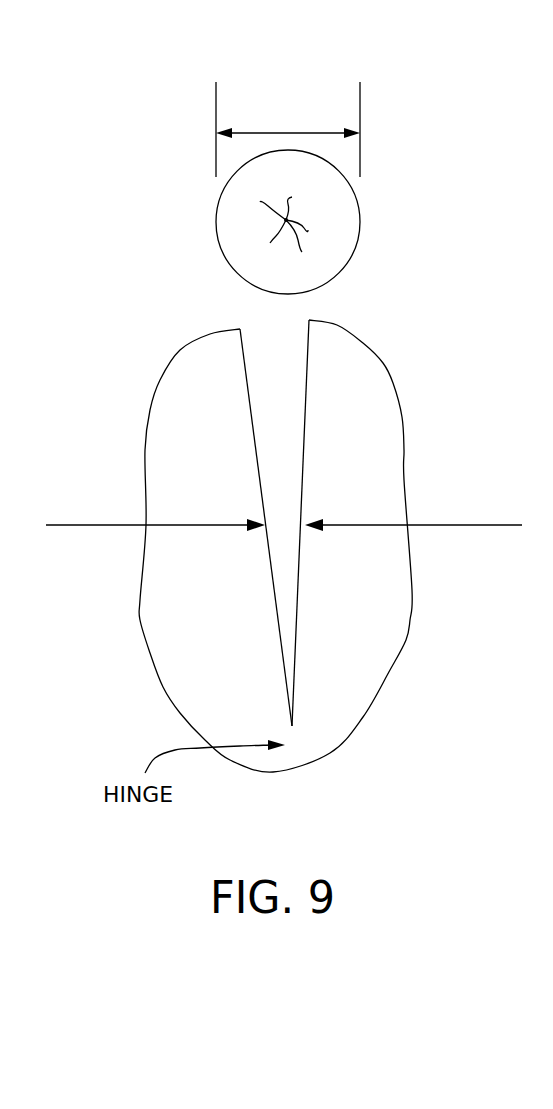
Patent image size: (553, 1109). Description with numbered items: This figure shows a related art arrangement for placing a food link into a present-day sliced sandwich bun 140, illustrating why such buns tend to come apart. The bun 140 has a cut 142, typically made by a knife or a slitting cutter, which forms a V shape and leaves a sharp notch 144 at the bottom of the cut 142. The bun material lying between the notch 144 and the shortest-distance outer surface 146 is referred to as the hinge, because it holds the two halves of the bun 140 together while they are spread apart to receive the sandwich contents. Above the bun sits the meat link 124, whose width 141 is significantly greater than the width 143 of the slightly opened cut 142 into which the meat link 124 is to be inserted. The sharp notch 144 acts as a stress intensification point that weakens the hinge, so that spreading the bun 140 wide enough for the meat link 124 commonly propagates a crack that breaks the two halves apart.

The meat link 124 is at (347, 232).
The sliced sandwich bun 140 is at (128, 422).
The width of the meat link 141 is at (272, 132).
The cut 142 is at (258, 330).
The width of the cut 143 is at (395, 520).
The sharp notch 144 is at (292, 726).
The shortest-distance outer surface 146 is at (277, 773).